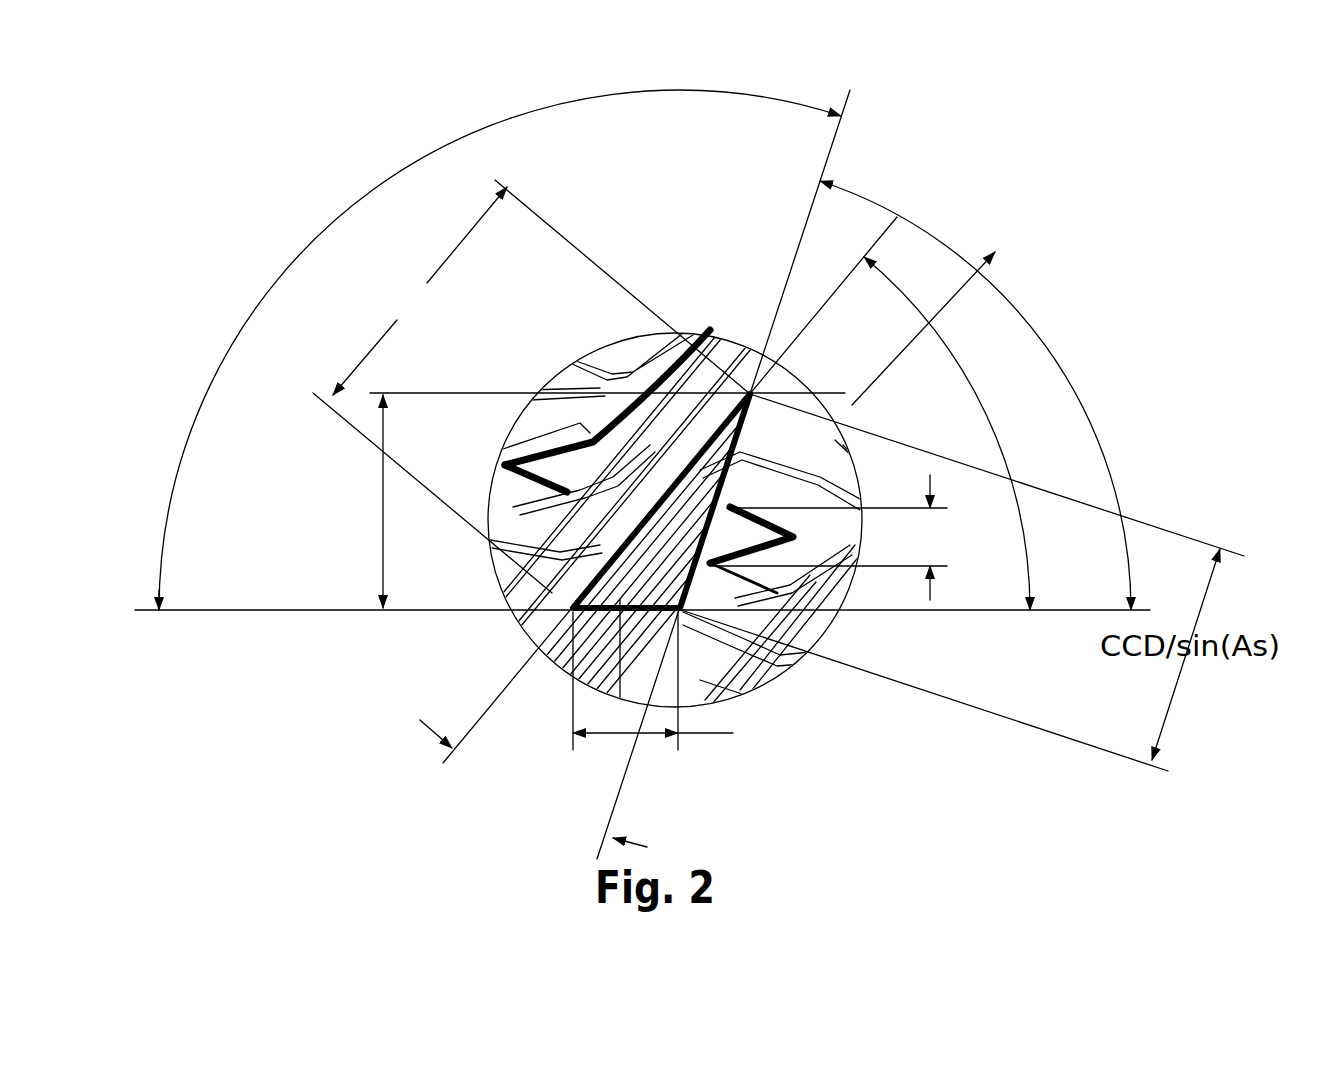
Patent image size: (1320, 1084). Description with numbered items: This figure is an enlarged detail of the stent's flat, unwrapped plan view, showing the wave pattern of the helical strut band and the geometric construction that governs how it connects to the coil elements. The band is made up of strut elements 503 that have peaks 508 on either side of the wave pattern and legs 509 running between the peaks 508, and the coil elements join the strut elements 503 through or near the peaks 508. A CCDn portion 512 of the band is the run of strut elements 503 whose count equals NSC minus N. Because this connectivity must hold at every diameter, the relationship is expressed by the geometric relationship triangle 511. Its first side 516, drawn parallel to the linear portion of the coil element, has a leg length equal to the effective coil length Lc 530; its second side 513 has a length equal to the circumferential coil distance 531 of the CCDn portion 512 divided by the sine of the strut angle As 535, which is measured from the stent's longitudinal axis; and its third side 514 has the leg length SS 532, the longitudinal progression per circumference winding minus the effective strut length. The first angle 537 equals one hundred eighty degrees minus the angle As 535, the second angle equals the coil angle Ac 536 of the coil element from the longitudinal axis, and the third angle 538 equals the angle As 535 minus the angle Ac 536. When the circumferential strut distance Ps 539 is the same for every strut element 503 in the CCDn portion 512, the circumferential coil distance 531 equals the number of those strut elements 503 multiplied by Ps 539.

The strut element 503 is at (790, 565).
The peak 508 is at (843, 393).
The leg 509 is at (505, 465).
The geometric relationship triangle 511 is at (672, 577).
The CCDn portion 512 is at (822, 394).
The second side 513 is at (688, 625).
The third side 514 is at (623, 595).
The first side 516 is at (715, 510).
The effective length (Lc) of coil element 530 is at (383, 298).
The circumferential coil distance (CCD) 531 is at (340, 500).
The leg length (SS) 532 is at (780, 745).
The angle As 535 is at (1045, 318).
The angle Ac 536 is at (993, 397).
The first angle 537 is at (320, 195).
The third angle 538 is at (355, 697).
The circumferential strut distance (Ps) 539 is at (960, 540).